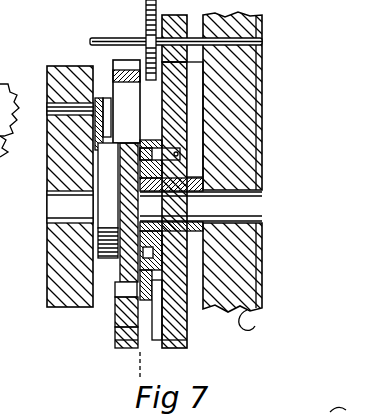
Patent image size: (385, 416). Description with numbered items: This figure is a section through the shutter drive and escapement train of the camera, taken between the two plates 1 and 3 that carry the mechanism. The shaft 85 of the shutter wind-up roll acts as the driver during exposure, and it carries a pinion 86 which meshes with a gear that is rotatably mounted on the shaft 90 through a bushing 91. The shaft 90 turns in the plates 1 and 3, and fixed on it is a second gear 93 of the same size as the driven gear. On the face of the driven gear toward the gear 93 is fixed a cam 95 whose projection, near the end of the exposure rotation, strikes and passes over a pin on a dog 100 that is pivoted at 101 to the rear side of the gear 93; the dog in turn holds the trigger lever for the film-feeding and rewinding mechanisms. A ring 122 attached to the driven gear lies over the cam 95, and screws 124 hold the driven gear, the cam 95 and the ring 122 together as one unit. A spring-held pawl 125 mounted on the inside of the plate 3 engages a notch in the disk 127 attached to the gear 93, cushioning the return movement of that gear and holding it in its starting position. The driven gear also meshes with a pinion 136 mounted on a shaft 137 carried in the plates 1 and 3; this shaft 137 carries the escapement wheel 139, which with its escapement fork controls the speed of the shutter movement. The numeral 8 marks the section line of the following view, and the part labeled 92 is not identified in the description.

The plate 1 is at (251, 323).
The plate 3 is at (62, 243).
The section line 8 is at (130, 3).
The shaft 85 is at (13, 101).
The pinion 86 is at (7, 145).
The shaft 90 is at (262, 190).
The bushing 91 is at (200, 163).
The gap 92 is at (195, 119).
The second gear 93 is at (133, 99).
The cam 95 is at (184, 262).
The dog 100 is at (114, 336).
The pivot 101 is at (116, 300).
The ring 122 is at (117, 284).
The screws 124 is at (182, 151).
The spring-held pawl 125 is at (100, 97).
The disk 127 is at (97, 176).
The pinion 136 is at (184, 26).
The shaft 137 is at (262, 41).
The escapement wheel 139 is at (146, 22).